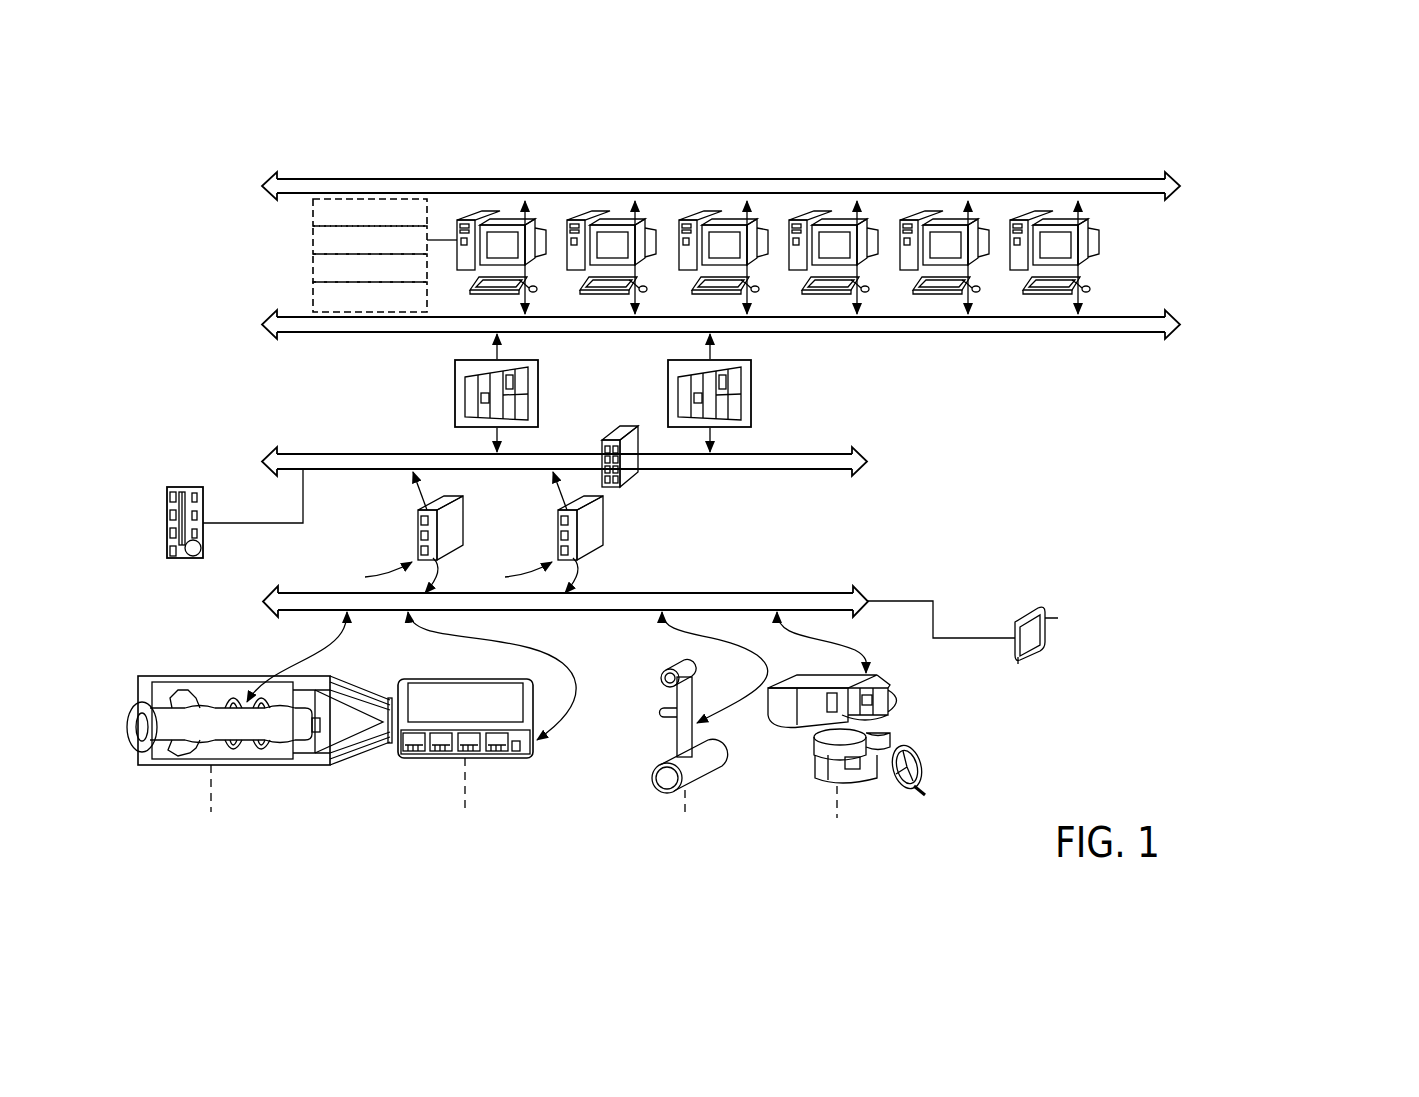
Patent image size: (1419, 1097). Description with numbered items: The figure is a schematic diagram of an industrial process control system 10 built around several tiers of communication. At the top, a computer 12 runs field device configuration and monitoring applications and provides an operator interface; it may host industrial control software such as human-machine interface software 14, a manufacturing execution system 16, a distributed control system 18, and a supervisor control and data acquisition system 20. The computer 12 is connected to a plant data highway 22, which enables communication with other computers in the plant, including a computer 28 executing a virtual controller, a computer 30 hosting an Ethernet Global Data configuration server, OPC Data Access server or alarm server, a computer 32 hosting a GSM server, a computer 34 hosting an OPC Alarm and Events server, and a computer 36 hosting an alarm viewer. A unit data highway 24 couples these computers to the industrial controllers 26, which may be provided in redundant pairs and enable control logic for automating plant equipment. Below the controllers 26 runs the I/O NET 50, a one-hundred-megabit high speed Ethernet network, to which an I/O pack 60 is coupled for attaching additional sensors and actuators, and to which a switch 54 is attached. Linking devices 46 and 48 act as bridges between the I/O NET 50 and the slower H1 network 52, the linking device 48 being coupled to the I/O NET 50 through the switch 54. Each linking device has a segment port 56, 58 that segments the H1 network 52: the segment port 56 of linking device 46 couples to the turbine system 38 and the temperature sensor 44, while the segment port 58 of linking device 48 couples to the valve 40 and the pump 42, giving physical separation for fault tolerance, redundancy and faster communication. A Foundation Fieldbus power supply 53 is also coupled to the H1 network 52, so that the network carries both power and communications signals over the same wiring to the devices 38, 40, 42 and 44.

The industrial process control system 10 is at (1307, 181).
The computer 12 is at (460, 220).
The human-machine interface (HMI) software 14 is at (313, 215).
The manufacturing execution system (MES) 16 is at (313, 243).
The distributed control system (DCS) 18 is at (313, 270).
The supervisor control and data acquisition (SCADA) system 20 is at (313, 298).
The plant data highway 22 is at (1170, 176).
The unit data highway 24 is at (1170, 314).
The industrial controller 26 is at (540, 394).
The computer 28 is at (570, 220).
The computer 30 is at (682, 220).
The computer 32 is at (792, 220).
The computer 34 is at (903, 220).
The computer 36 is at (1013, 220).
The turbine system 38 is at (287, 773).
The valve 40 is at (700, 775).
The pump 42 is at (920, 770).
The temperature sensor 44 is at (493, 760).
The linking device 46 is at (458, 528).
The linking device 48 is at (598, 528).
The I/O NET 50 is at (869, 466).
The H1 network 52 is at (873, 593).
The Foundation Fieldbus power supply 53 is at (1026, 608).
The switch 54 is at (628, 484).
The segment port 56 is at (374, 575).
The segment port 58 is at (514, 575).
The I/O pack 60 is at (184, 487).